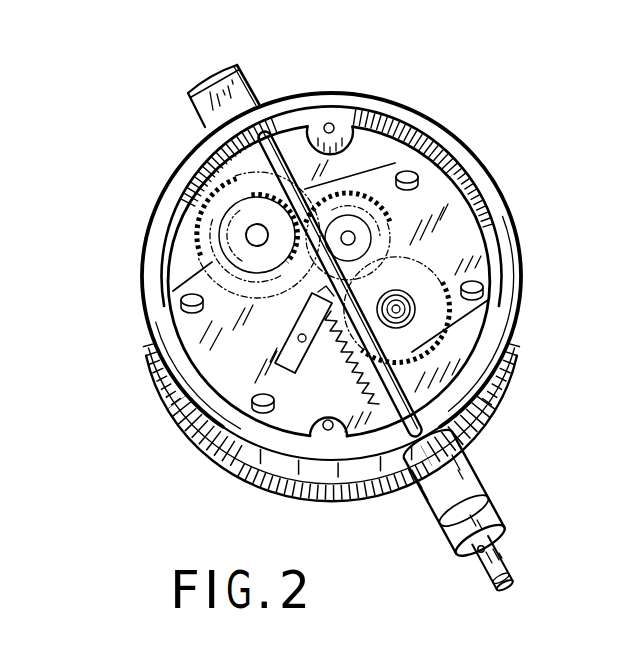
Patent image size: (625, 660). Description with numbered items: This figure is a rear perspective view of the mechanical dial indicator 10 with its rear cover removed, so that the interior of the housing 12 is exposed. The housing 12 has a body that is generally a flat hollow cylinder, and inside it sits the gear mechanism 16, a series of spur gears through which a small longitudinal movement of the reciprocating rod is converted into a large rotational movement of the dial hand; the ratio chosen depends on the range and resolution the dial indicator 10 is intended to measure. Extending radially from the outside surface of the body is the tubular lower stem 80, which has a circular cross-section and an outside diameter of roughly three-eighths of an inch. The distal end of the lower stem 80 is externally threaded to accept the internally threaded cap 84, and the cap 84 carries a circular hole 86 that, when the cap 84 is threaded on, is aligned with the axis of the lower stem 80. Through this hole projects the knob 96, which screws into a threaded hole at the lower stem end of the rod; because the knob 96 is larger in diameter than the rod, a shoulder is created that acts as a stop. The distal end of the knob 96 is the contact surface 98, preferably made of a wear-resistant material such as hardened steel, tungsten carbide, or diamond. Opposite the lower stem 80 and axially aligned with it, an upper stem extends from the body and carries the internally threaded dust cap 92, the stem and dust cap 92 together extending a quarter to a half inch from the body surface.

The mechanical dial indicator 10 is at (127, 165).
The housing 12 is at (460, 136).
The gear mechanism 16 is at (436, 234).
The lower stem 80 is at (480, 463).
The cap 84 is at (500, 514).
The circular hole 86 is at (472, 554).
The dust cap 92 is at (250, 68).
The knob 96 is at (515, 563).
The contact surface 98 is at (514, 585).